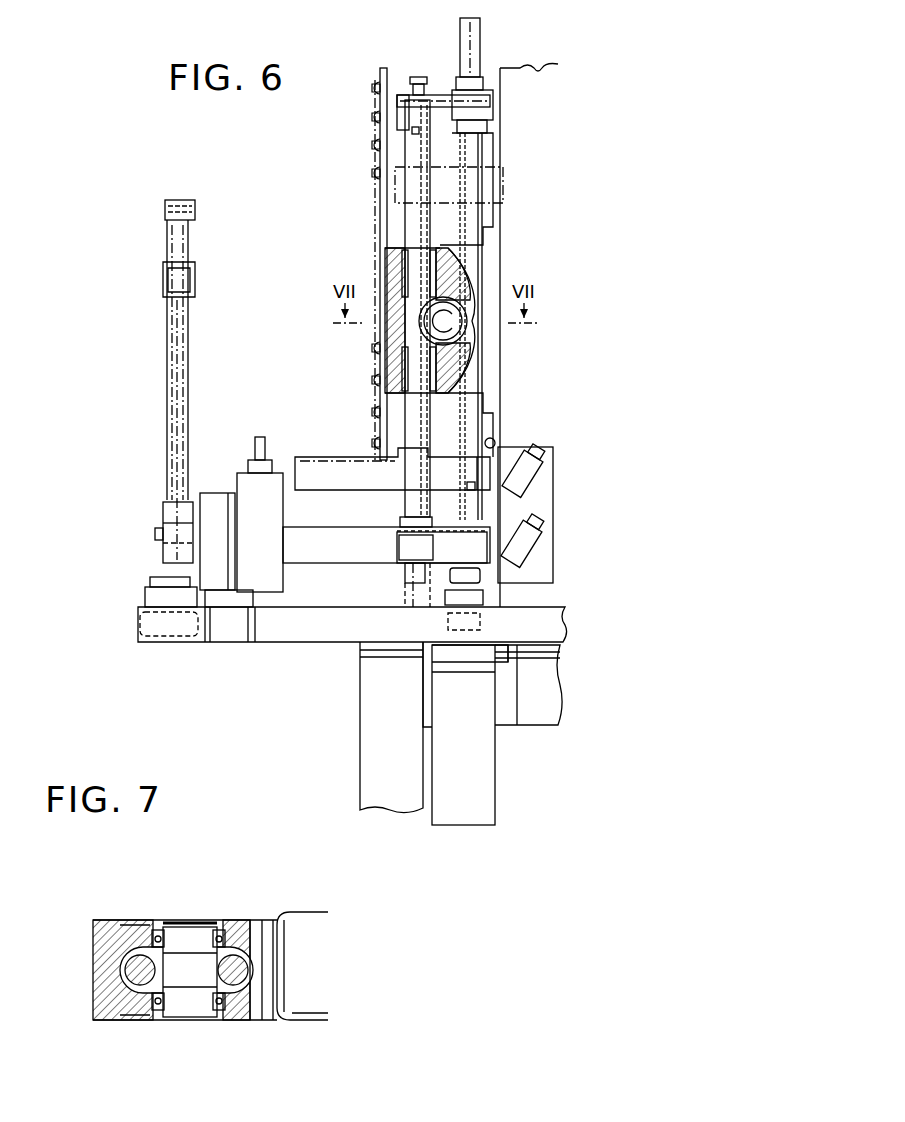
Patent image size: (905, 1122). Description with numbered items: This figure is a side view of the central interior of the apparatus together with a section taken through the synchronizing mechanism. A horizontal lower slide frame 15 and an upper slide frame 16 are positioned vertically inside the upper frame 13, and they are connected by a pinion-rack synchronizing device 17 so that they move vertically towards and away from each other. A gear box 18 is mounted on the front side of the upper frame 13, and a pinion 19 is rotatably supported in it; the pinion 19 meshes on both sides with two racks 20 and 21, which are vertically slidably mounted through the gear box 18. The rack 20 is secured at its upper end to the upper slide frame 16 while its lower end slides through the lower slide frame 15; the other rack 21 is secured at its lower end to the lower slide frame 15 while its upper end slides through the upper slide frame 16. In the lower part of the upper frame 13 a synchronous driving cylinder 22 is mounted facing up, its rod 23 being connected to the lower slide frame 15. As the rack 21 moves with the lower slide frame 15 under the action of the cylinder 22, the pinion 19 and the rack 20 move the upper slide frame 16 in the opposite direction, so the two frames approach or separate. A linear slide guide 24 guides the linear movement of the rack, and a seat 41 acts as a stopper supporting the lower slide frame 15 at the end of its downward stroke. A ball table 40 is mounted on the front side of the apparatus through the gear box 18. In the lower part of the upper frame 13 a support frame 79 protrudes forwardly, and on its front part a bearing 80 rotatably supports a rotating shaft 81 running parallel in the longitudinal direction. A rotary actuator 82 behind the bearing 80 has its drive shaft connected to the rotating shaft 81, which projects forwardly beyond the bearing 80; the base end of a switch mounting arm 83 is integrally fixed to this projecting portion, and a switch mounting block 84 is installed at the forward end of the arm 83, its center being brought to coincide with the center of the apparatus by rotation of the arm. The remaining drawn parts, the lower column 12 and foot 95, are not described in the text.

In FIG. 6, the base column 12 is at (358, 748).
In FIG. 6, the upper frame 13 is at (531, 68).
In FIG. 7, the upper frame 13 is at (303, 910).
In FIG. 6, the lower slide frame 15 is at (345, 455).
In FIG. 6, the upper slide frame 16 is at (441, 94).
In FIG. 6, the pinion-rack synchronizing device 17 is at (460, 277).
In FIG. 7, the pinion-rack synchronizing device 17 is at (150, 1028).
In FIG. 6, the gear box 18 is at (388, 322).
In FIG. 7, the gear box 18 is at (93, 1010).
In FIG. 6, the pinion 19 is at (450, 326).
In FIG. 7, the pinion 19 is at (182, 1022).
In FIG. 6, the rack 20 is at (410, 224).
In FIG. 7, the rack 20 is at (127, 920).
In FIG. 6, the rack 21 is at (473, 218).
In FIG. 7, the rack 21 is at (240, 920).
In FIG. 6, the synchronous driving cylinder 22 is at (484, 765).
In FIG. 6, the rod 23 is at (480, 584).
In FIG. 6, the linear slide guide 24 is at (403, 268).
In FIG. 7, the linear slide guide 24 is at (125, 970).
In FIG. 6, the ball table 40 is at (386, 68).
In FIG. 6, the seat (stopper) 41 is at (408, 591).
In FIG. 6, the support frame 79 is at (278, 644).
In FIG. 6, the bearing 80 is at (212, 497).
In FIG. 6, the rotating shaft 81 is at (180, 518).
In FIG. 6, the rotary actuator 82 is at (277, 478).
In FIG. 6, the switch mounting arm 83 is at (176, 339).
In FIG. 6, the switch mounting block 84 is at (172, 227).
In FIG. 6, the foot 95 is at (156, 573).